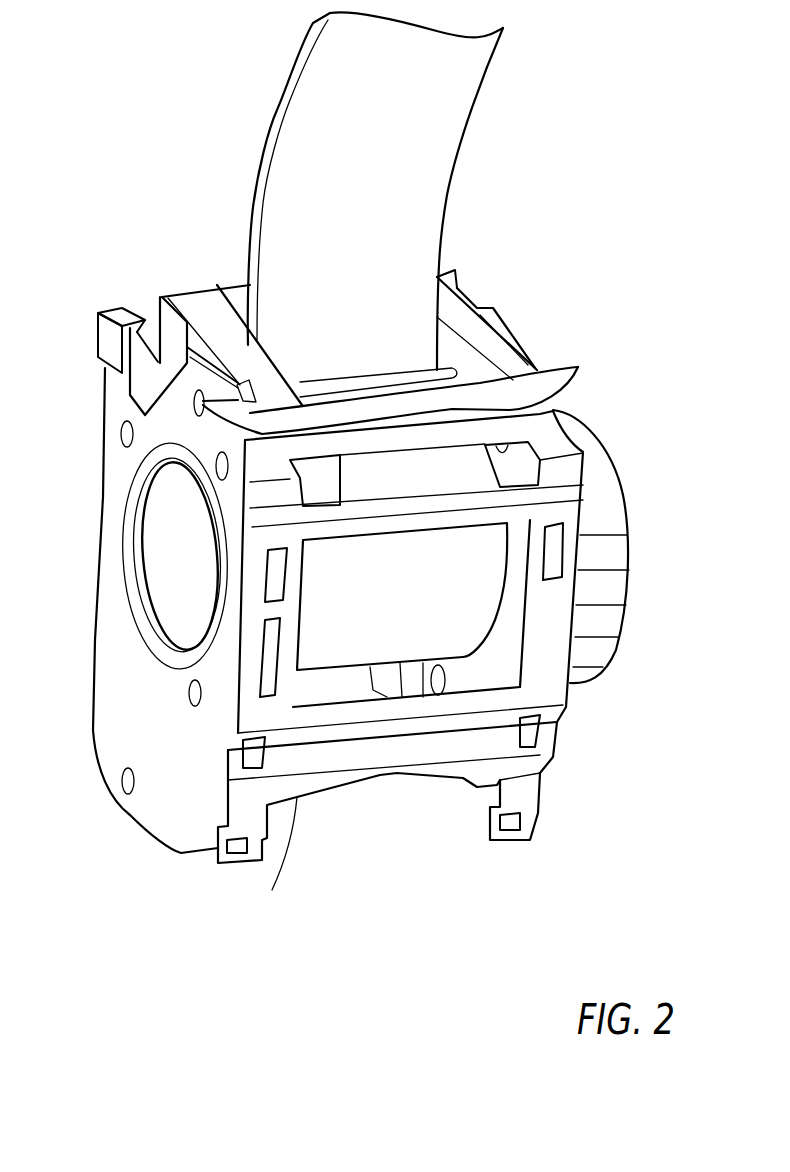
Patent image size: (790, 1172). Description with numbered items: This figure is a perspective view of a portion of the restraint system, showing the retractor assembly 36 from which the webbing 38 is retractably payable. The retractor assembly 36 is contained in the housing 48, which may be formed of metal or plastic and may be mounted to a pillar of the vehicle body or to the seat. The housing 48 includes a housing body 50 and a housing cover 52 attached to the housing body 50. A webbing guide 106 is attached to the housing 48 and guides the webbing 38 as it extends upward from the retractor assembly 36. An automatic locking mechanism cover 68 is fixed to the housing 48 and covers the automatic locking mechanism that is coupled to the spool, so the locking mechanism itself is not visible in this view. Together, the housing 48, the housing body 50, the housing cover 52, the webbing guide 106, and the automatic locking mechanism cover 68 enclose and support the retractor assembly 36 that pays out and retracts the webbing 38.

The retractor assembly 36 is at (118, 102).
The webbing 38 is at (466, 121).
The webbing guide 106 is at (505, 318).
The automatic locking mechanism cover 68 is at (627, 507).
The housing 48 is at (118, 930).
The housing body 50 is at (181, 855).
The housing cover 52 is at (287, 867).